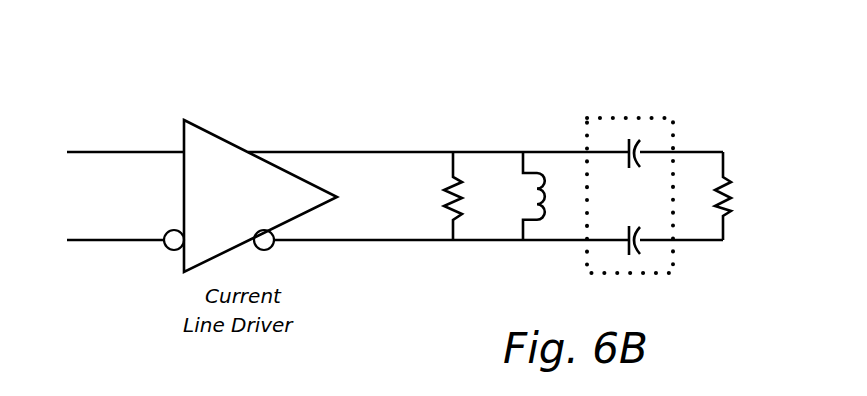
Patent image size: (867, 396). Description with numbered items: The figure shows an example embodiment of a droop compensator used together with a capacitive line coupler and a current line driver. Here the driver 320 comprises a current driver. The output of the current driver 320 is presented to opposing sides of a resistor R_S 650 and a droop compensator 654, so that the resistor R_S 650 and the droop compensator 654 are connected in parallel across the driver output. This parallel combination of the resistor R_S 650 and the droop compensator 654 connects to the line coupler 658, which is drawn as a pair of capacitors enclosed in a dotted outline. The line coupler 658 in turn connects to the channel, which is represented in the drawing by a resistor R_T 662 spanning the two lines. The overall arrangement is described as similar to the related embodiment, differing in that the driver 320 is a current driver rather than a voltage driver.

The driver 320 is at (250, 196).
The resistor R_S 650 is at (454, 176).
The droop compensator 654 is at (536, 172).
The line coupler 658 is at (645, 117).
The resistor R_T 662 is at (730, 176).